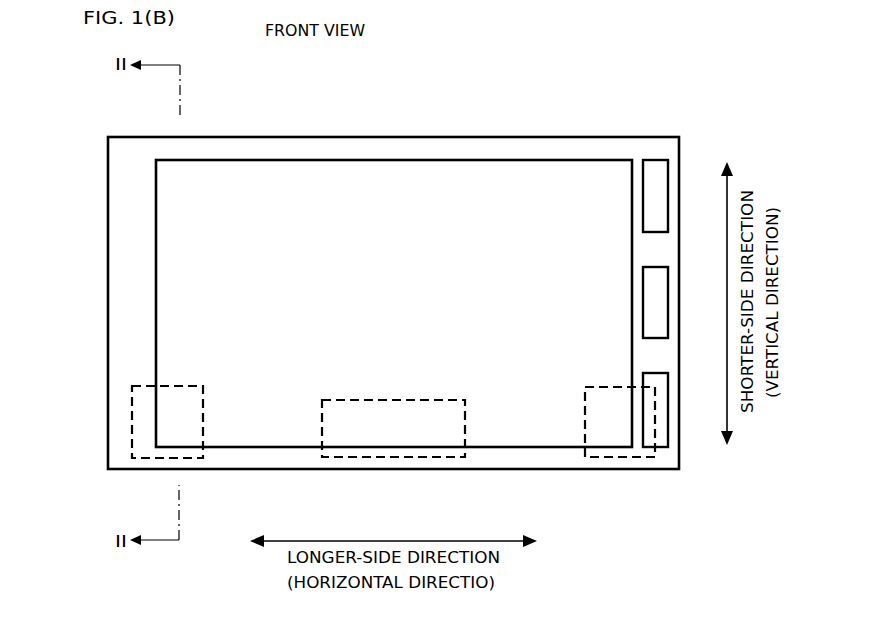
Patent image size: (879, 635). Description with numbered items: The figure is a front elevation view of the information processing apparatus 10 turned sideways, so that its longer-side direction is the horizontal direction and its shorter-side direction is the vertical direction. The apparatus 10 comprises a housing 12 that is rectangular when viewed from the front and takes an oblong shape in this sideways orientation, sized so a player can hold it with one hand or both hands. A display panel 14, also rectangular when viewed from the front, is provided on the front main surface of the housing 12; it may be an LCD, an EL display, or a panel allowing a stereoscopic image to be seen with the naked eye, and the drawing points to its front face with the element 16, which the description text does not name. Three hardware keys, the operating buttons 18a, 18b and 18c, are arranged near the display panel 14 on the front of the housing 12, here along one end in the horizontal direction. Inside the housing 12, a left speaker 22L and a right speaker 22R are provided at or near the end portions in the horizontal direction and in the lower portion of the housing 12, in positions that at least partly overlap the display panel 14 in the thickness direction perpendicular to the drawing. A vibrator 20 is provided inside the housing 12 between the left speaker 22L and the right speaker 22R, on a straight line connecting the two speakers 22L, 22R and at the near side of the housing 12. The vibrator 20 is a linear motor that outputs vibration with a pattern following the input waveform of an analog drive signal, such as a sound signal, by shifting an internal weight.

The information processing apparatus 10 is at (238, 109).
The housing 12 is at (296, 140).
The display panel 14 is at (512, 173).
The display surface 16 is at (418, 189).
The operating button 18a is at (662, 400).
The operating button 18b is at (657, 303).
The operating button 18c is at (657, 192).
The vibrator 20 is at (450, 412).
The left speaker 22L is at (190, 422).
The right speaker 22R is at (597, 422).